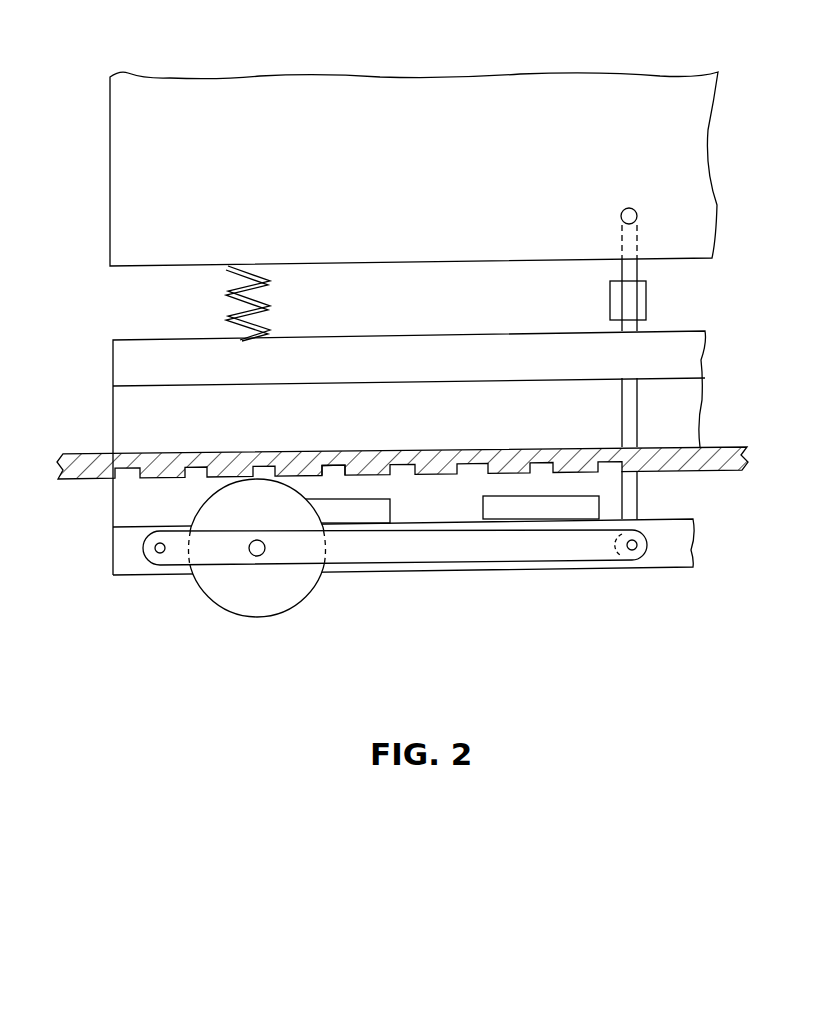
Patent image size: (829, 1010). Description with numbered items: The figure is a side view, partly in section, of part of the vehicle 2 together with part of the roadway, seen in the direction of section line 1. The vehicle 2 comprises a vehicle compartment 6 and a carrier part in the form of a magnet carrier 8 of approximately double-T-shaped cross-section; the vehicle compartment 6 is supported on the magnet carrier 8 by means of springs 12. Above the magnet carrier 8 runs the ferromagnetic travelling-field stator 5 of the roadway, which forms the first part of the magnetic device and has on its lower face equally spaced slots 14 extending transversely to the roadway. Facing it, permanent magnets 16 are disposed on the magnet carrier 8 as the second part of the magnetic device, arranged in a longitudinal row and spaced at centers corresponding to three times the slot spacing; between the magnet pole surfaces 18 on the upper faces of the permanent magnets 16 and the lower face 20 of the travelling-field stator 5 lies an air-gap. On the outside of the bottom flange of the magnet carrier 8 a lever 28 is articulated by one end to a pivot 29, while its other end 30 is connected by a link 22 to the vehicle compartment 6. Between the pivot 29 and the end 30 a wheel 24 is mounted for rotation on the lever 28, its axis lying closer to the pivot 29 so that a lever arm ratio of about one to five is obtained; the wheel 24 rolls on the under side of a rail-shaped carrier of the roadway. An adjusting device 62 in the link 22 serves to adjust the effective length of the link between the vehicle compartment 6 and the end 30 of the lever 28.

The section line I-I 1 is at (42, 108).
The vehicle 2 is at (133, 315).
The travelling-field stator 5 is at (724, 471).
The vehicle compartment 6 is at (430, 193).
The magnet carrier 8 is at (433, 419).
The spring 12 is at (273, 309).
The slot 14 is at (332, 471).
The permanent magnet 16 is at (537, 508).
The magnet pole surface 18 is at (490, 497).
The lower face of the travelling-field stator 20 is at (488, 478).
The link 22 is at (621, 270).
The wheel 24 is at (302, 592).
The lever 28 is at (410, 549).
The pivot 29 is at (160, 556).
The end of the lever 30 is at (627, 548).
The adjusting device 62 is at (647, 302).